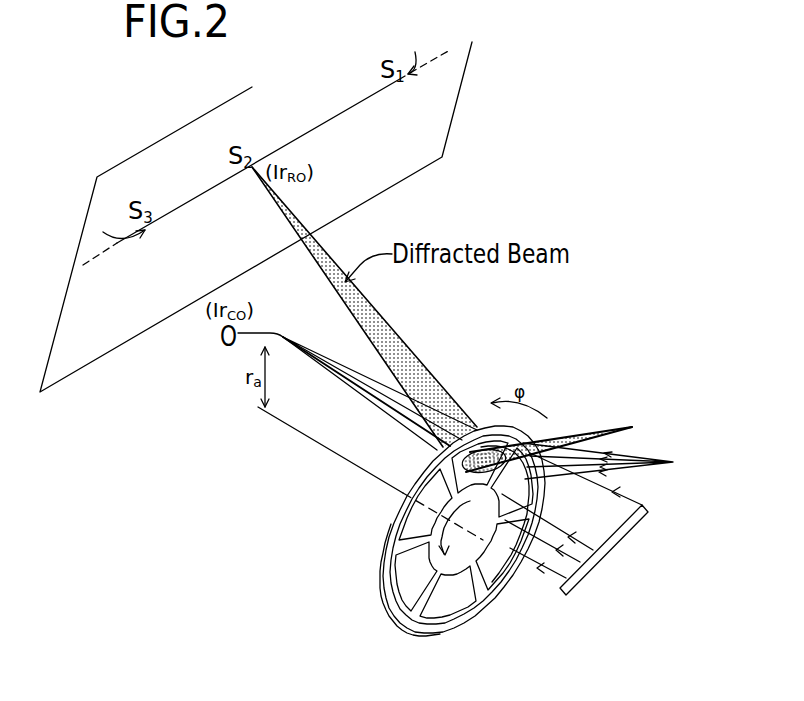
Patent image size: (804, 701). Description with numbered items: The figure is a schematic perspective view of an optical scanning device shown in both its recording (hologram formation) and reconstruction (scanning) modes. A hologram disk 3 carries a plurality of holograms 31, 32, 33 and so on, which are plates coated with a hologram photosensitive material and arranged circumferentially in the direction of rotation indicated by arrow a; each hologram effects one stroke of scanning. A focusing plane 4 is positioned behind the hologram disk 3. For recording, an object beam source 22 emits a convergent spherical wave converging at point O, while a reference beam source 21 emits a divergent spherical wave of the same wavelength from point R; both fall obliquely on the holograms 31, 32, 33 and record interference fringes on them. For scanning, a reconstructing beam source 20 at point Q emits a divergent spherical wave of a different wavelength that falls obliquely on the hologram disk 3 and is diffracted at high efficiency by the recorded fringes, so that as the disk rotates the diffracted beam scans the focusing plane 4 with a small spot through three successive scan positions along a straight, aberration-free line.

The hologram disk 3 is at (420, 531).
The focusing plane 4 is at (427, 132).
The reconstructing beam source 20 is at (632, 425).
The reference beam source 21 is at (673, 466).
The object beam source 22 is at (573, 581).
The hologram 31 is at (487, 447).
The hologram 32 is at (420, 520).
The hologram 33 is at (420, 585).